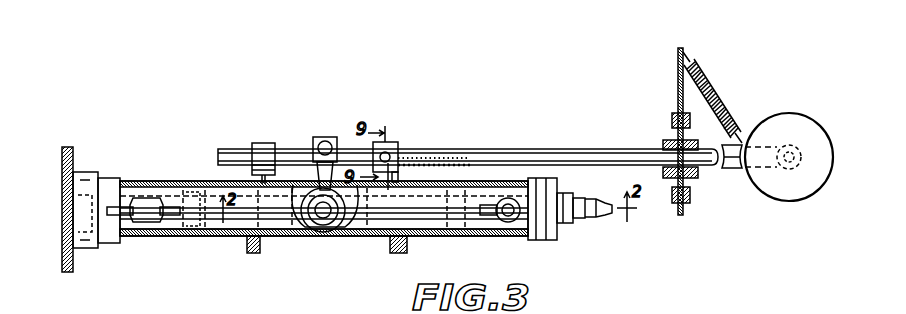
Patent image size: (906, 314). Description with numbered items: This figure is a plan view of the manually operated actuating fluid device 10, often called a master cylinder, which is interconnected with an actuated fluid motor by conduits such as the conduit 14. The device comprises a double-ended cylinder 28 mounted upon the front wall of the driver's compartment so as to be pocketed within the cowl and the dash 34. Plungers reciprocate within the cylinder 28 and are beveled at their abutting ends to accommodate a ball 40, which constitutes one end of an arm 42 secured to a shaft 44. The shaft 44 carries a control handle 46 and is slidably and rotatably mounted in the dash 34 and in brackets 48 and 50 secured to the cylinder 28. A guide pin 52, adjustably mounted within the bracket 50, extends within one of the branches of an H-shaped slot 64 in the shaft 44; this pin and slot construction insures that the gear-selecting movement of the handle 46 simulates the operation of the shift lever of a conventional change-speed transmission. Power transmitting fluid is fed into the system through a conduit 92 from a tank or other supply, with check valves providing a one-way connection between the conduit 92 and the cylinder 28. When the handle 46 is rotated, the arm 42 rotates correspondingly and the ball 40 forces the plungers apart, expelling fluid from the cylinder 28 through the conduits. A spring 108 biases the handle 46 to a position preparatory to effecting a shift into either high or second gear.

The actuating fluid device 10 is at (517, 243).
The conduit 14 is at (607, 215).
The double-ended cylinder 28 is at (220, 238).
The dash 34 is at (685, 211).
The ball 40 is at (313, 230).
The arm 42 is at (313, 180).
The shaft 44 is at (567, 153).
The control handle 46 is at (773, 123).
The bracket 48 is at (262, 155).
The bracket 50 is at (395, 142).
The guide pin 52 is at (407, 153).
The H-shaped slot 64 is at (437, 157).
The conduit 92 is at (133, 218).
The spring 108 is at (710, 70).